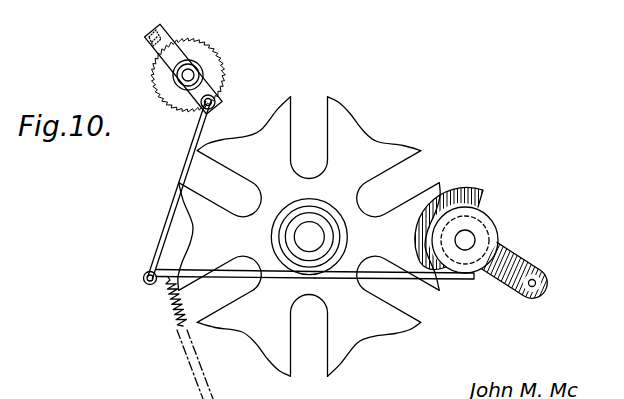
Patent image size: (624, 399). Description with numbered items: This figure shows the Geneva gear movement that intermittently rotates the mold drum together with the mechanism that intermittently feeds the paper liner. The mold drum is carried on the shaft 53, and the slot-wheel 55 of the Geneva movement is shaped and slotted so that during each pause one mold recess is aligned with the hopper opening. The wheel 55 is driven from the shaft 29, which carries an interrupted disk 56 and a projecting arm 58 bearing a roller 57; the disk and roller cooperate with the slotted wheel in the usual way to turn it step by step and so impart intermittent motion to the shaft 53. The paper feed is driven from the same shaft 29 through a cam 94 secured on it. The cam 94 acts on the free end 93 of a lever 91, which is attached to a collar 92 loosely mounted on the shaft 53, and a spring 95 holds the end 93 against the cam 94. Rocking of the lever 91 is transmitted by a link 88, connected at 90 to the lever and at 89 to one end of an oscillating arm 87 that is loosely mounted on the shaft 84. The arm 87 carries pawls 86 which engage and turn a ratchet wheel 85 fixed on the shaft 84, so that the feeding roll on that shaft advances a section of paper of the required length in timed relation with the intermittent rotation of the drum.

The shaft 29 is at (468, 240).
The shaft 53 is at (311, 232).
The slot-wheel 55 is at (367, 150).
The interrupted disk 56 is at (480, 195).
The roller 57 is at (552, 282).
The projecting arm 58 is at (510, 257).
The shaft 84 is at (196, 74).
The ratchet wheel 85 is at (212, 70).
The pawls 86 is at (147, 48).
The oscillating arm 87 is at (178, 55).
The link 88 is at (195, 137).
The connection 89 is at (222, 94).
The connection 90 is at (145, 282).
The lever 91 is at (193, 270).
The collar 92 is at (347, 238).
The free end of the lever 93 is at (473, 280).
The cam 94 is at (447, 210).
The spring 95 is at (170, 322).